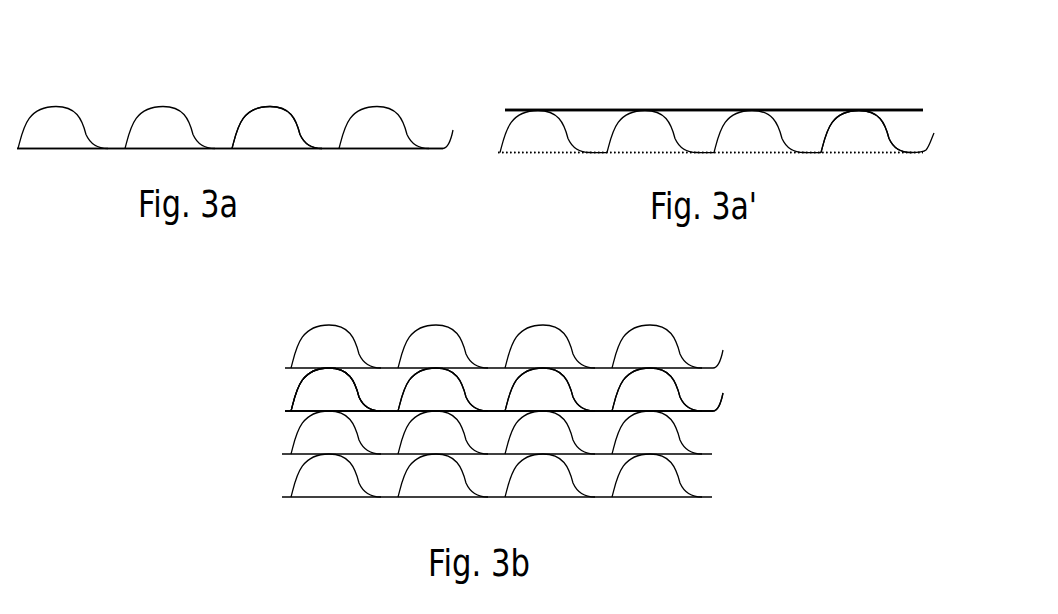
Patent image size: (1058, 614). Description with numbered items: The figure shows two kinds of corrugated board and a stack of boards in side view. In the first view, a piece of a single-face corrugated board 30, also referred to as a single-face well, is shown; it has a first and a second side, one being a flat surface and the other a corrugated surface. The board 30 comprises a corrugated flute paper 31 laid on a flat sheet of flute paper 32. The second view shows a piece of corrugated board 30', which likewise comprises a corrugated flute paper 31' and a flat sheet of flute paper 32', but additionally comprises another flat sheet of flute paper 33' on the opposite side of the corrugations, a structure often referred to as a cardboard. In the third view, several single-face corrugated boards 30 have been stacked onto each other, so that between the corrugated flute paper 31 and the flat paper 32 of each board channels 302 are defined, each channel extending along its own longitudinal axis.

In FIG. 3A, the single-face corrugated board 30 is at (235, 83).
In FIG. 3B, the single-face corrugated board 30 is at (454, 408).
In FIG. 3A, the corrugated flute paper 31 is at (277, 177).
In FIG. 3B, the corrugated flute paper 31 is at (283, 437).
In FIG. 3A, the flat sheet of flute paper 32 is at (230, 198).
In FIG. 3B, the flat sheet of flute paper 32 is at (536, 462).
In FIG. 3A', the corrugated board 30' is at (716, 81).
In FIG. 3A', the corrugated flute paper 31' is at (866, 187).
In FIG. 3A', the flat sheet of flute paper 32' is at (707, 208).
In FIG. 3A', the flat sheet of flute paper 33' is at (714, 67).
In FIG. 3B, the channels 302 is at (504, 346).